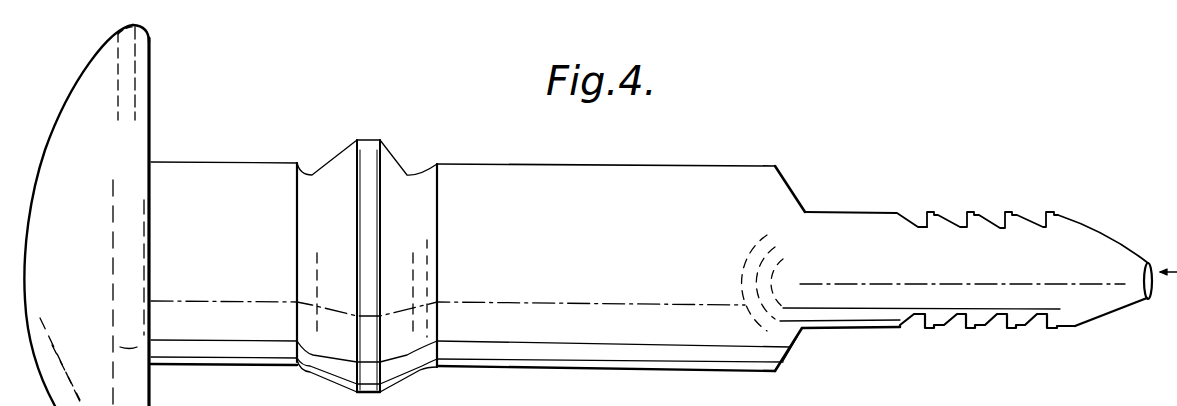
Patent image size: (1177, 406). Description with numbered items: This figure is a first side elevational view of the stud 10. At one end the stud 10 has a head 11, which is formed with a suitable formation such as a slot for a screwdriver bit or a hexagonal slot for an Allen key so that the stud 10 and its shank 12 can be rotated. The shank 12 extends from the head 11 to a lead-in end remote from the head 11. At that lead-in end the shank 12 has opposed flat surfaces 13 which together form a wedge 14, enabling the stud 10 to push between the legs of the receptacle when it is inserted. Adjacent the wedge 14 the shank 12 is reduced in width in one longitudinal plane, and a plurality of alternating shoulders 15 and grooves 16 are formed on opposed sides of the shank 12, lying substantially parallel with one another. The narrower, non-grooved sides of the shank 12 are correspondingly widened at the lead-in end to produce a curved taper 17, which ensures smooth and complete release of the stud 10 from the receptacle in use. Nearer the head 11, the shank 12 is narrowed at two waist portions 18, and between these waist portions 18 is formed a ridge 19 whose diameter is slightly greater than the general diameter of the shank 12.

The stud 10 is at (776, 162).
The head 11 is at (133, 143).
The shank 12 is at (523, 181).
The flat surfaces 13 is at (1112, 238).
The wedge 14 is at (1084, 266).
The shoulders 15 is at (978, 214).
The grooves 16 is at (1000, 225).
The curved taper 17 is at (867, 275).
The waist portions 18 is at (318, 185).
The ridge 19 is at (370, 140).